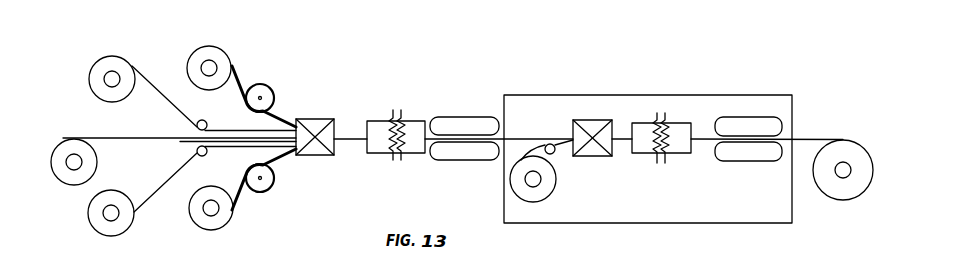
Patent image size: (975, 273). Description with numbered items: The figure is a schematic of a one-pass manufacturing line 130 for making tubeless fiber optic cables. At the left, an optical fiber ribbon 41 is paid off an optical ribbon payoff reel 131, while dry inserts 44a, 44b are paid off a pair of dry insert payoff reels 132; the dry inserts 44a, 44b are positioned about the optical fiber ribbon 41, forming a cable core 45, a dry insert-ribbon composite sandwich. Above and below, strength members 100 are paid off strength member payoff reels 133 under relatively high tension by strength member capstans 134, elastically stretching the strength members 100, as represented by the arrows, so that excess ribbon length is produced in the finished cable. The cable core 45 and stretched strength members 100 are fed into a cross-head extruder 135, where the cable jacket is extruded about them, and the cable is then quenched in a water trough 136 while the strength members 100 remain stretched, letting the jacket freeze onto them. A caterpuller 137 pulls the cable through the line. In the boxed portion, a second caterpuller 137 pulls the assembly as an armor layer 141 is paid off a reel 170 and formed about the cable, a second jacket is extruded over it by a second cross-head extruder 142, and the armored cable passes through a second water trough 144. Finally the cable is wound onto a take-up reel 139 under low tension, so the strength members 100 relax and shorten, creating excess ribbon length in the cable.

The one-pass manufacturing line 130 is at (58, 53).
The optical fiber ribbon 41 is at (113, 137).
The optical ribbon payoff reel 131 is at (75, 175).
The dry insert payoff reel 132 is at (95, 78).
The strength member payoff reel 133 is at (203, 50).
The dry insert 44a is at (165, 100).
The dry insert 44b is at (165, 183).
The cable core 45 is at (234, 130).
The strength member capstan 134 is at (248, 94).
The strength member 100 is at (276, 113).
The cross-head extruder 135 is at (325, 118).
The water trough 136 is at (410, 120).
The caterpuller 137 is at (458, 115).
The reel 170 is at (546, 196).
The armor layer 141 is at (560, 143).
The cross-head extruder 142 is at (573, 120).
The second water trough 144 is at (643, 148).
The take-up reel 139 is at (845, 200).